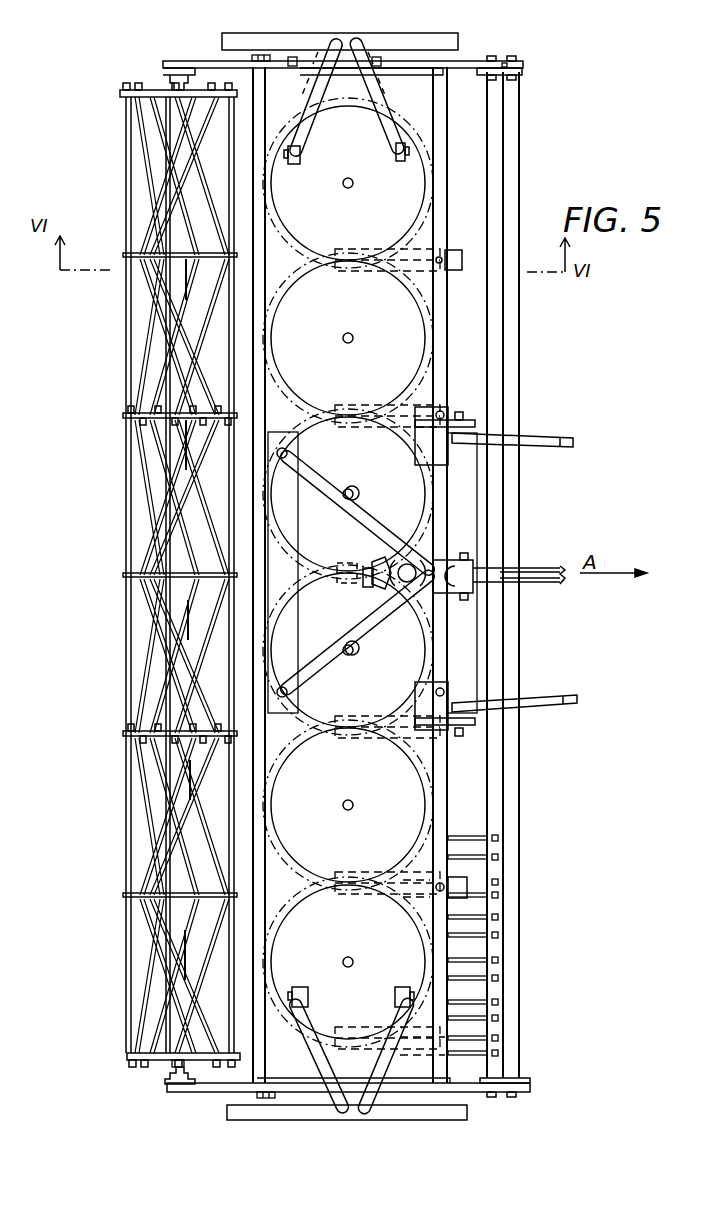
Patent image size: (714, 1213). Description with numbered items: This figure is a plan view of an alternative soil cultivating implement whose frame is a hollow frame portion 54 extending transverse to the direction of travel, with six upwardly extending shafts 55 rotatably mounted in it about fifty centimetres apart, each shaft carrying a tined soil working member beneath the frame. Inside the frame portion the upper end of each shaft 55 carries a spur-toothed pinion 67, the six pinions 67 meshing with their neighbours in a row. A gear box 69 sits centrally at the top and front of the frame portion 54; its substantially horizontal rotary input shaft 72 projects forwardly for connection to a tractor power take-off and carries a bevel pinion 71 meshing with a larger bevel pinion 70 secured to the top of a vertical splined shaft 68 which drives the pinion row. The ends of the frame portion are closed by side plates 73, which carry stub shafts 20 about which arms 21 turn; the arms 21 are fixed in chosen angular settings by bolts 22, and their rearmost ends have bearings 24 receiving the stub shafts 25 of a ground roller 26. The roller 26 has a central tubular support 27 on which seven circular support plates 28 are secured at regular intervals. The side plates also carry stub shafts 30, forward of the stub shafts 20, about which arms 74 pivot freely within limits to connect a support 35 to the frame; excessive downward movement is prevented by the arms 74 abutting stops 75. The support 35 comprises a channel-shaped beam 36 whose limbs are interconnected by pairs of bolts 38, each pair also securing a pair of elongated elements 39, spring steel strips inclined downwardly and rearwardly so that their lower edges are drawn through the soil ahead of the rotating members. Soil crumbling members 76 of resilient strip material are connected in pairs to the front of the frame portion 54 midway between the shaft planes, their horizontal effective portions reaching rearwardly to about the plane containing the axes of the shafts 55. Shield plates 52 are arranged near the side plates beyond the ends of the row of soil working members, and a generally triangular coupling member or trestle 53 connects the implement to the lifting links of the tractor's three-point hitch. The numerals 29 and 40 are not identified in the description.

The stub shafts 20 is at (330, 42).
The arms 21 is at (210, 62).
The bolts 22 is at (260, 55).
The bearings 24 is at (163, 72).
The stub shafts 25 is at (172, 1065).
The ground roller 26 is at (163, 575).
The tubular support 27 is at (165, 540).
The support plates 28 is at (124, 576).
The reel member 29 is at (150, 804).
The stub shafts 30 is at (372, 57).
The support 35 is at (519, 205).
The beam 36 is at (512, 799).
The bolts 38 is at (497, 856).
The elongated elements 39 is at (472, 836).
The bolt 40 is at (521, 71).
The shield plates 52 is at (314, 36).
The coupling member or trestle 53 is at (474, 497).
The hollow frame portion 54 is at (436, 124).
The shafts 55 is at (342, 811).
The pinions 67 is at (296, 282).
The splined shaft 68 is at (438, 560).
The gear box 69 is at (370, 548).
The bevel pinion 70 is at (372, 560).
The bevel pinion 71 is at (368, 598).
The rotary input shaft 72 is at (408, 612).
The side plates 73 is at (396, 78).
The arms 74 is at (468, 61).
The stops 75 is at (364, 82).
The soil crumbling members 76 is at (452, 249).